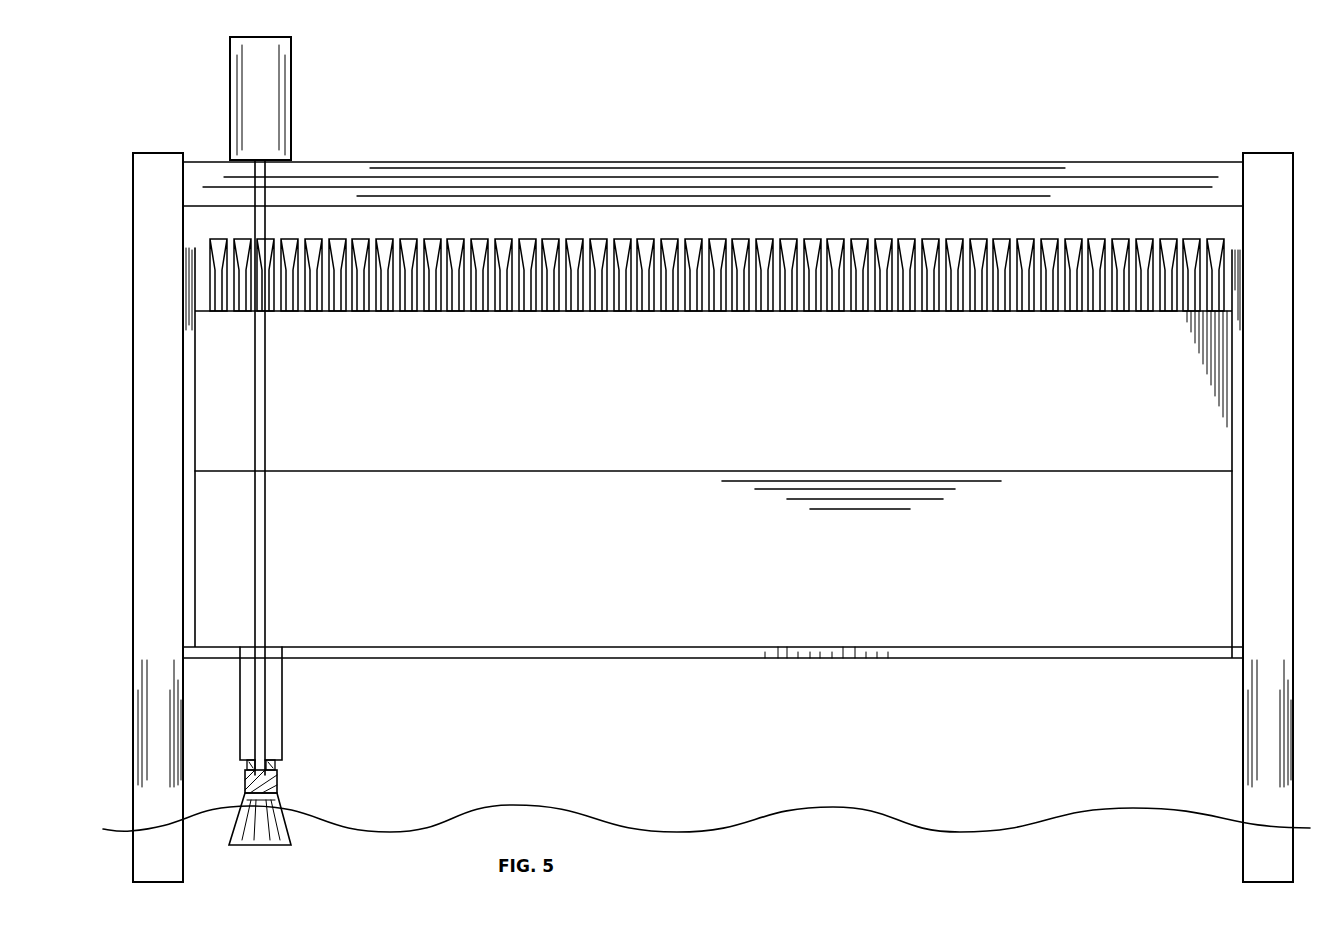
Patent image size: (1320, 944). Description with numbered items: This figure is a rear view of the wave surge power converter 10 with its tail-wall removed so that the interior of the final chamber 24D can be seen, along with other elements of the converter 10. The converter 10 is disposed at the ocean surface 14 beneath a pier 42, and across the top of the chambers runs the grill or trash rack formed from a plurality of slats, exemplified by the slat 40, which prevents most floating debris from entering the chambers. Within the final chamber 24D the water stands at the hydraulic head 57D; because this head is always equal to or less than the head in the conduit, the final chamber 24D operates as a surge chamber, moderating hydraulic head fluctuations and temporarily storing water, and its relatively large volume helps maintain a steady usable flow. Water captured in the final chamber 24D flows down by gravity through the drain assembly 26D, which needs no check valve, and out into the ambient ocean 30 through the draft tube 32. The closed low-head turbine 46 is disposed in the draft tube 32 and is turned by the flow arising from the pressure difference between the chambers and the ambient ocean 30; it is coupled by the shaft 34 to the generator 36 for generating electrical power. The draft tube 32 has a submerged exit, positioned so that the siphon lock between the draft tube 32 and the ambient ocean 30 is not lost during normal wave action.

The wave surge power converter 10 is at (668, 98).
The ocean surface 14 is at (1025, 825).
The final chamber 24D is at (601, 549).
The drain assembly 26D is at (282, 679).
The ambient ocean 30 is at (980, 861).
The draft tube 32 is at (263, 846).
The shaft 34 is at (266, 398).
The generator 36 is at (230, 90).
The slat 40 is at (402, 246).
The pier 42 is at (858, 162).
The low-head turbine 46 is at (277, 781).
The hydraulic head 57D is at (826, 471).